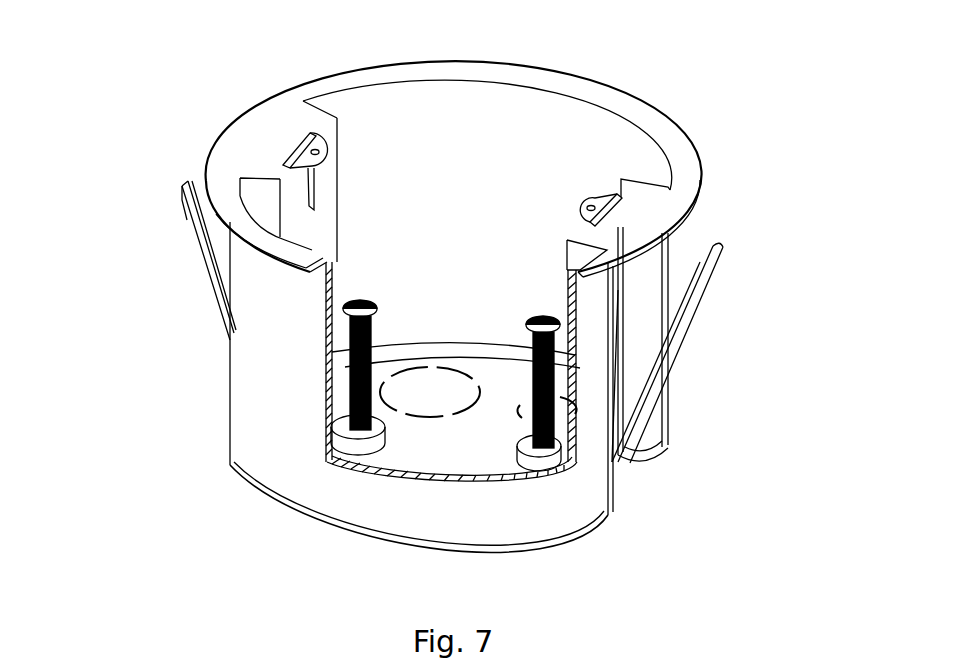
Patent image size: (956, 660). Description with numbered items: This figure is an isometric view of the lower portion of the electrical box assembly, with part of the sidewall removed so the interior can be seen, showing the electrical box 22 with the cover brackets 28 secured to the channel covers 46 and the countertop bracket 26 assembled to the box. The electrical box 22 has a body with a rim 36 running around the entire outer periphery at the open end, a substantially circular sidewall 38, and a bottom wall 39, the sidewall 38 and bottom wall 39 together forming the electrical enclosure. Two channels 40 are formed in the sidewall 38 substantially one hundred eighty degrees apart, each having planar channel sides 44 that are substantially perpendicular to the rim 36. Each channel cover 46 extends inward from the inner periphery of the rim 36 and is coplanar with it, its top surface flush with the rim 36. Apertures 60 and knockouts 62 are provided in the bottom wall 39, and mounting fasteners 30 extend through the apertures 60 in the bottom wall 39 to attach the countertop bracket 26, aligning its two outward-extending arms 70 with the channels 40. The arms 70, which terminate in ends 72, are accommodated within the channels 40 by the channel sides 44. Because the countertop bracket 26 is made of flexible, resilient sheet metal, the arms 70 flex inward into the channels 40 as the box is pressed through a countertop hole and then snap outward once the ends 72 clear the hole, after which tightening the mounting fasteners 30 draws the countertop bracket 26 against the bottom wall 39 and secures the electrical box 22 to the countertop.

The electrical box 22 is at (134, 88).
The countertop bracket 26 is at (645, 407).
The cover bracket 28 is at (328, 138).
The mounting fastener 30 is at (367, 300).
The rim 36 is at (622, 107).
The sidewall 38 is at (450, 215).
The bottom wall 39 is at (461, 443).
The channel 40 is at (645, 287).
The channel side 44 is at (650, 460).
The channel cover 46 is at (252, 151).
The aperture 60 is at (381, 422).
The knockout 62 is at (418, 402).
The arm 70 is at (203, 255).
The end 72 is at (196, 172).